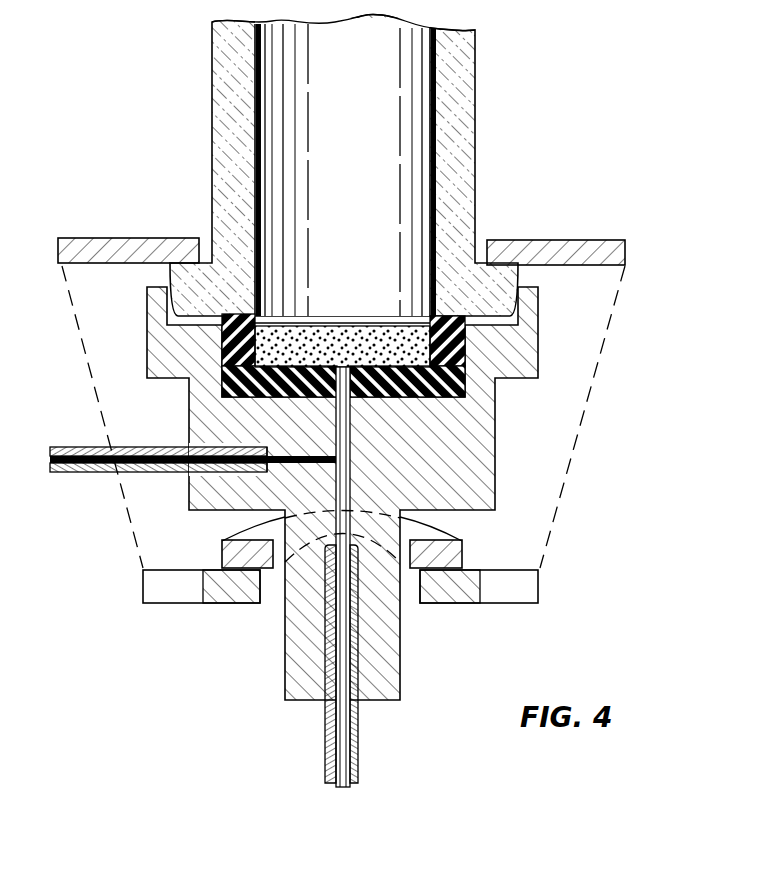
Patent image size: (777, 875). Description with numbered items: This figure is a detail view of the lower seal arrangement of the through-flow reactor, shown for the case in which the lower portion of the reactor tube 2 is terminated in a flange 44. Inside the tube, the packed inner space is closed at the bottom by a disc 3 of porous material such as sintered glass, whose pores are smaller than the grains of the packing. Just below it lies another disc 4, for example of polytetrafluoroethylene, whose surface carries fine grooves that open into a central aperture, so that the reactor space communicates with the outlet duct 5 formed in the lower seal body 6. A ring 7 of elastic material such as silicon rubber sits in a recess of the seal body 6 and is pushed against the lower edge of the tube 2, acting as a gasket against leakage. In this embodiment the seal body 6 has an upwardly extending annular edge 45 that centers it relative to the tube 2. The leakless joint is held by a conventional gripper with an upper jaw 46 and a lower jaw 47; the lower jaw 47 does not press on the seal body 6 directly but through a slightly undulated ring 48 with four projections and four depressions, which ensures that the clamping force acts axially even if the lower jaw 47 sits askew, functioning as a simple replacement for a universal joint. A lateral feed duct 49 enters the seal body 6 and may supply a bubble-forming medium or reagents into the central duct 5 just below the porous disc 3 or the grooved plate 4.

The reactor tube 2 is at (470, 106).
The porous disc 3 is at (318, 336).
The grooved disc 4 is at (365, 374).
The outlet duct 5 is at (346, 426).
The lower seal body 6 is at (486, 468).
The ring 7 is at (462, 378).
The flange 44 is at (507, 266).
The annular edge 45 is at (537, 316).
The upper jaw 46 is at (137, 248).
The lower jaw 47 is at (243, 596).
The curved ring 48 is at (462, 552).
The lateral feed duct 49 is at (148, 447).